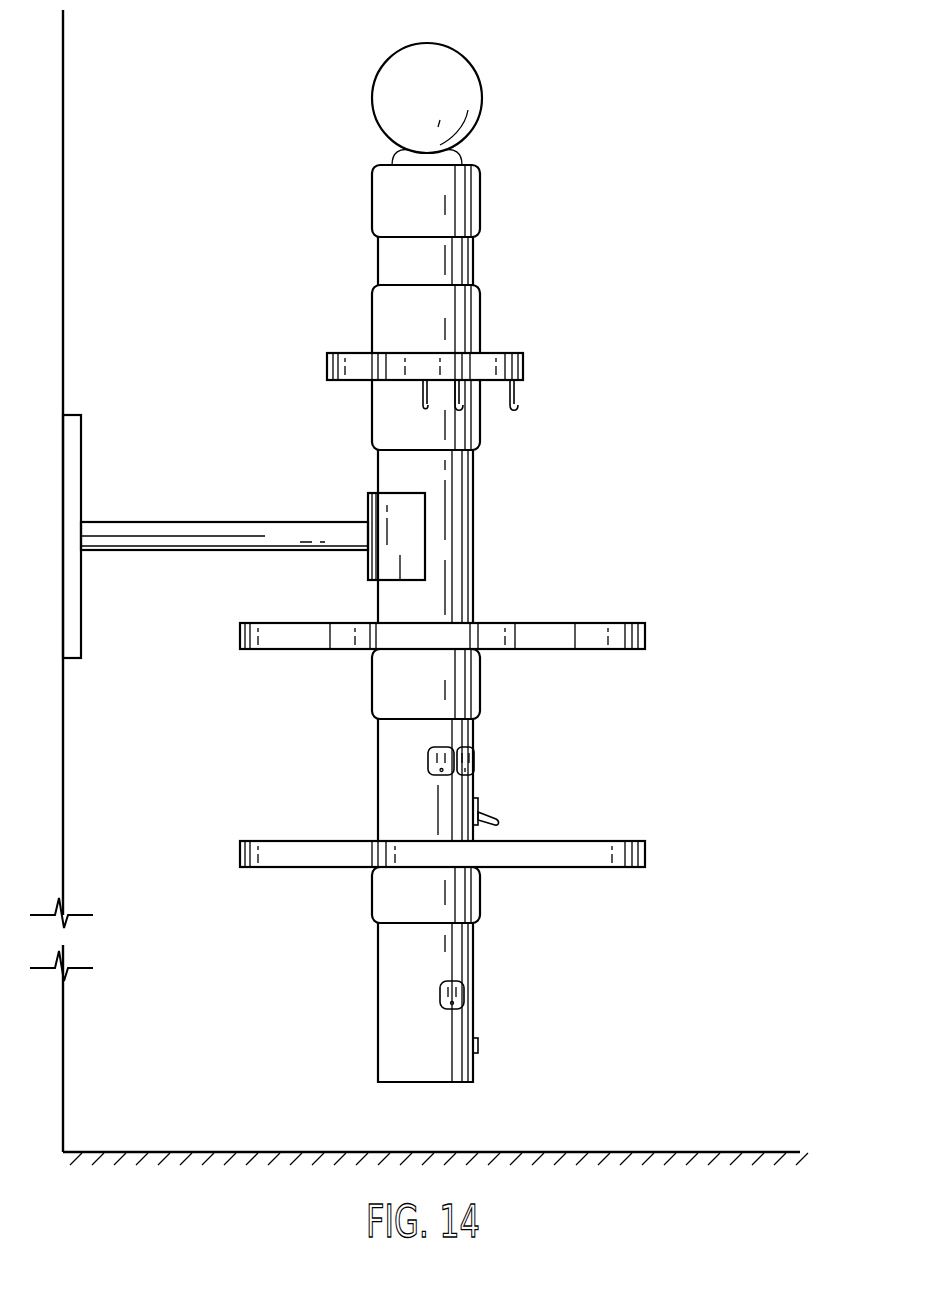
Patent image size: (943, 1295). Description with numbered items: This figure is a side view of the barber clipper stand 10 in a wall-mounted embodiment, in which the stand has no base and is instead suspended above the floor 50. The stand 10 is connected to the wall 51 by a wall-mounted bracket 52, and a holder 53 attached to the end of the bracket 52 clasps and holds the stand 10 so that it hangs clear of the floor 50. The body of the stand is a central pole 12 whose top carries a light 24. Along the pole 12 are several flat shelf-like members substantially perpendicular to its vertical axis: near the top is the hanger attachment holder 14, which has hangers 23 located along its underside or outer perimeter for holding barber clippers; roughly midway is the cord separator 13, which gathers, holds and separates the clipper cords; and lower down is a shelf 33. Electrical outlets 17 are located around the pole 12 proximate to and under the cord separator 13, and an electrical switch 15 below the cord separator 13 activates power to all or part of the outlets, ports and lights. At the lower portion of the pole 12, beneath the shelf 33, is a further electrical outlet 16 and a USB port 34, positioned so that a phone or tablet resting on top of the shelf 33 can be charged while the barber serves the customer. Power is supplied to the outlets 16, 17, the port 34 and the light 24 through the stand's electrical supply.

The barber clipper stand 10 is at (653, 168).
The central pole 12 is at (473, 957).
The cord separator 13 is at (645, 633).
The hanger attachment holder 14 is at (345, 353).
The electrical switch 15 is at (498, 815).
The electrical outlet 16 is at (440, 990).
The electrical outlet 17 is at (478, 762).
The hanger 23 is at (425, 408).
The light 24 is at (458, 93).
The shelf 33 is at (645, 856).
The USB port 34 is at (478, 1047).
The floor 50 is at (743, 1152).
The wall 51 is at (63, 785).
The wall-mounted bracket 52 is at (163, 522).
The holder 53 is at (368, 515).